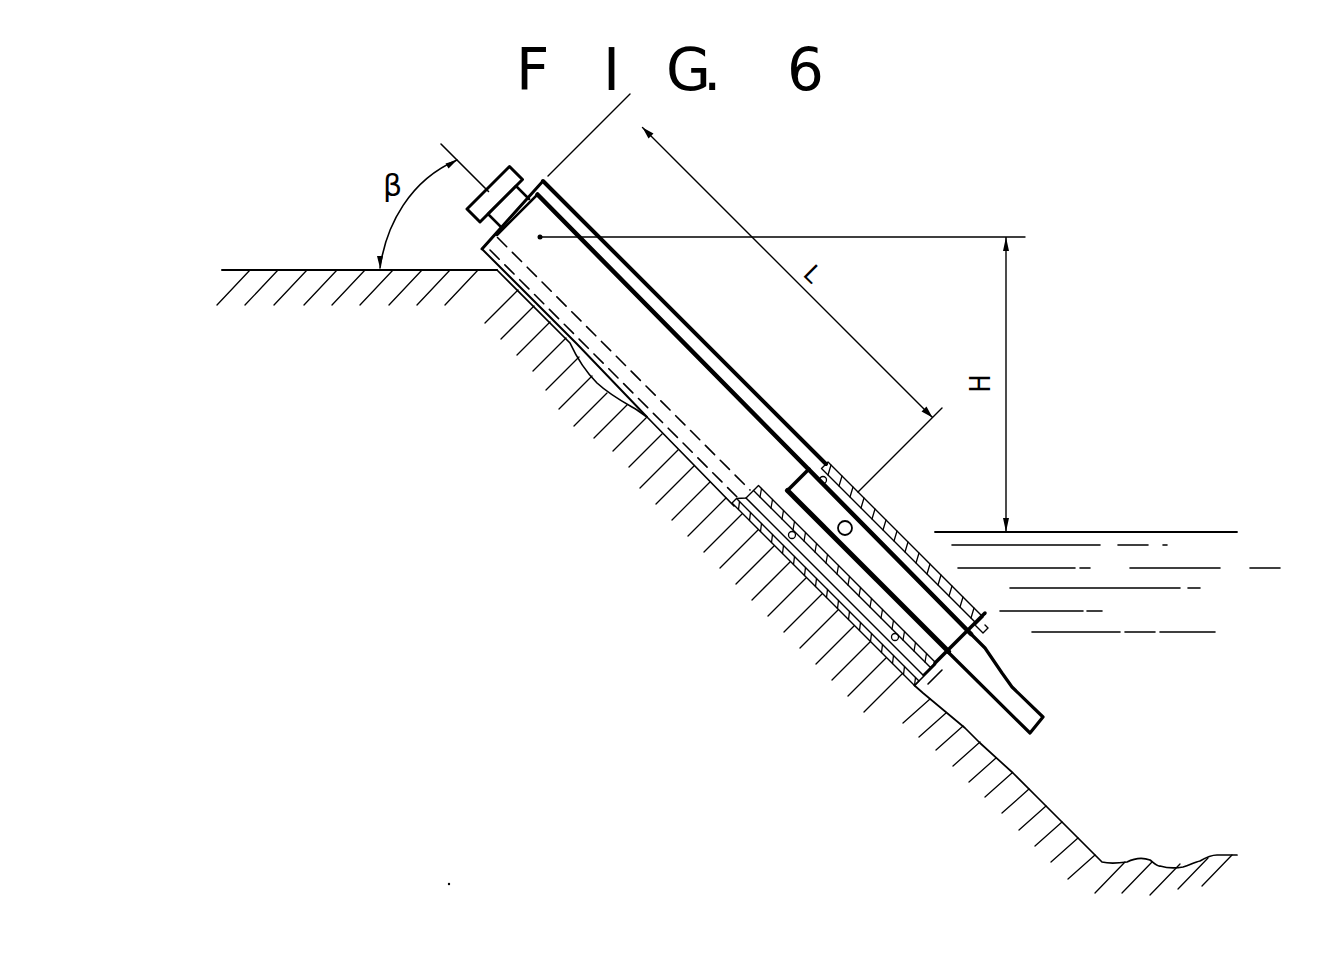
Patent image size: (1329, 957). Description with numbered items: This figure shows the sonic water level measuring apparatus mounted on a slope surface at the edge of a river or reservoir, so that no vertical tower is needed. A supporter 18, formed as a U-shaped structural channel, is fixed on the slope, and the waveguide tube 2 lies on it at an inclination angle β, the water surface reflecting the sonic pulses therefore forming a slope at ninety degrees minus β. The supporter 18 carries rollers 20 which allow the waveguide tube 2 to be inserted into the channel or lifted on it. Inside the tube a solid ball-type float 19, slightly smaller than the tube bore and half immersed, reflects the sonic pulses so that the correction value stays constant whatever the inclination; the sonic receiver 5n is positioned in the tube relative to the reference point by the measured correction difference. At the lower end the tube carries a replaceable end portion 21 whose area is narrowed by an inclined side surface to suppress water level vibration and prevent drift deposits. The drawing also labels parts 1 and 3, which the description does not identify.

The end cap 1 is at (515, 170).
The casing tube 3 is at (682, 328).
The supporter 18 is at (730, 440).
The sonic receiver 5n is at (825, 465).
The ball-type float 19 is at (865, 524).
The waveguide tube 2 is at (870, 580).
The rollers 20 is at (750, 527).
The end portion 21 is at (1003, 673).